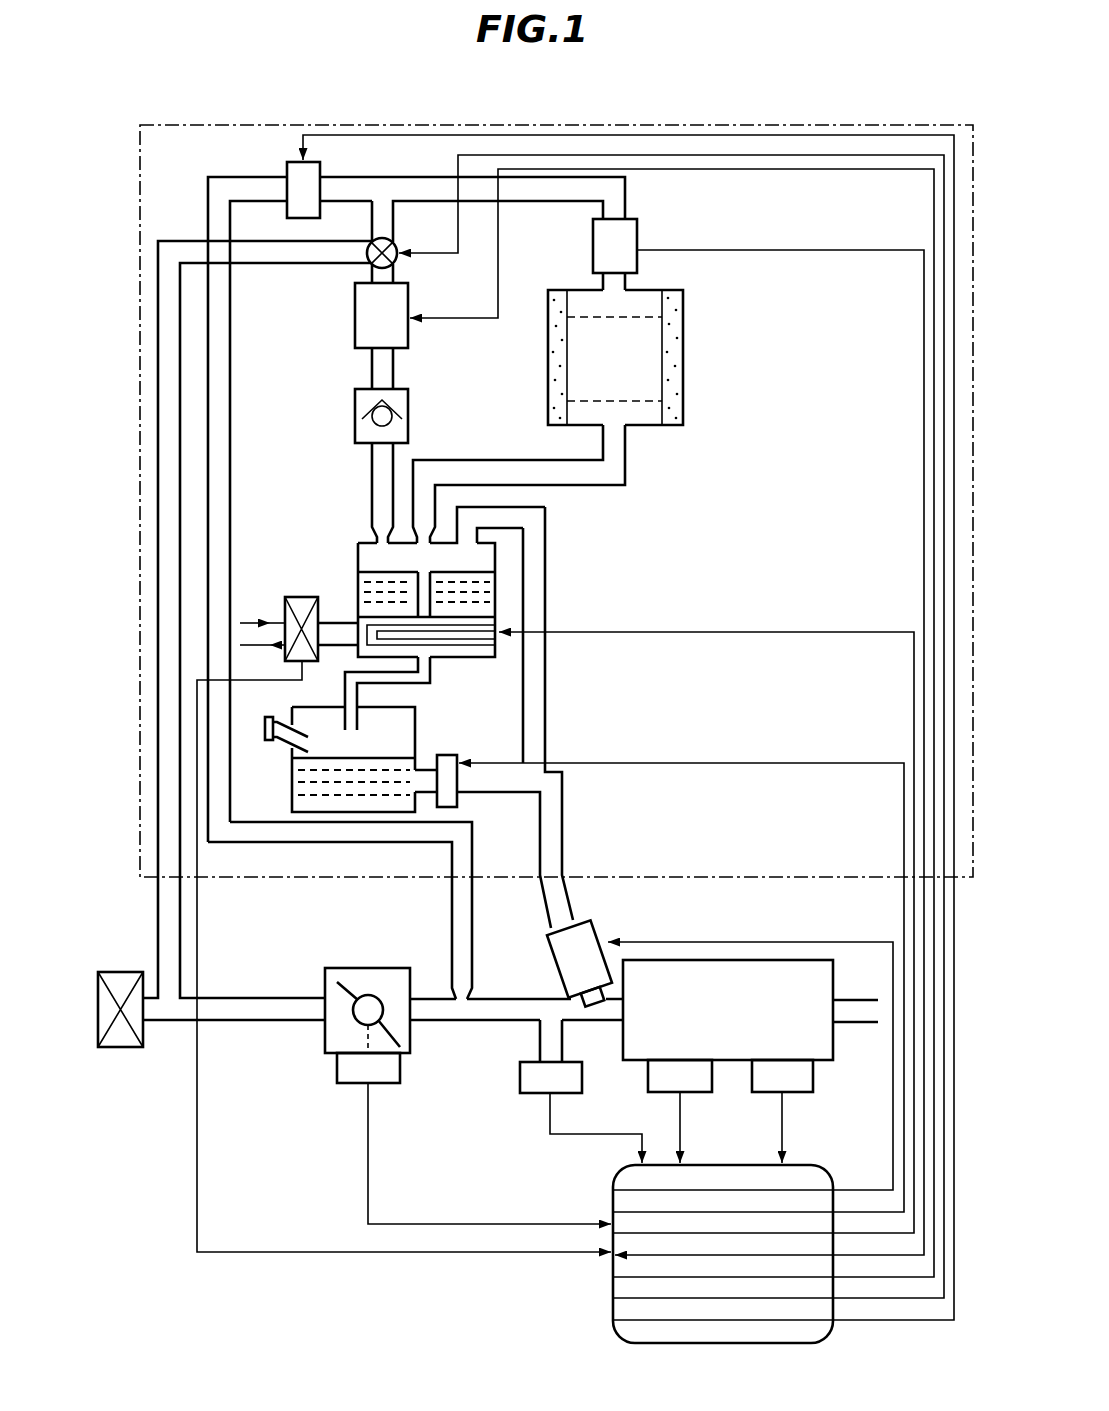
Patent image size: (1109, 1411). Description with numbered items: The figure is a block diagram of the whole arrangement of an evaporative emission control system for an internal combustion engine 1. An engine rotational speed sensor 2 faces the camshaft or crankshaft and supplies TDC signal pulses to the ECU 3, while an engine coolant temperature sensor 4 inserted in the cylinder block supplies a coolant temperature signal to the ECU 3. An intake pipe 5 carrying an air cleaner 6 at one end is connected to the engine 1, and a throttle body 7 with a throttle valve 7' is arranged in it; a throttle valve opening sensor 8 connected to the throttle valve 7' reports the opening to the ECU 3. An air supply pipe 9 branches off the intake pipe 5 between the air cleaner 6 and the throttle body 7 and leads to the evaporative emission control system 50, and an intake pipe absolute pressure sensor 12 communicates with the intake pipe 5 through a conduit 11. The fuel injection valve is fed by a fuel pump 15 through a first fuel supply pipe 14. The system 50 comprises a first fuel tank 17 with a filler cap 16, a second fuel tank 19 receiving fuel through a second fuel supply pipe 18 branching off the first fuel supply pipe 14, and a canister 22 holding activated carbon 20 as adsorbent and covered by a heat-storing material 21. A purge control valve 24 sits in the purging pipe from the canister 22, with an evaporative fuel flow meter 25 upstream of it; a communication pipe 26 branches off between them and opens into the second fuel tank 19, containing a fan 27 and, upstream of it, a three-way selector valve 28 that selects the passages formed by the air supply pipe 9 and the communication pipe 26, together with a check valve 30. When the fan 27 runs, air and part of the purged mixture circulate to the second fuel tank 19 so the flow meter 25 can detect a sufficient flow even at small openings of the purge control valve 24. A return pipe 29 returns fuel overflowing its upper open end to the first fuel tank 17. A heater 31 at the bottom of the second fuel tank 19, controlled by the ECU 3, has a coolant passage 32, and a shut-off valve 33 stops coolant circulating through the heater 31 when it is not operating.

The internal combustion engine 1 is at (833, 1065).
The engine rotational speed (NE) sensor 2 is at (752, 1075).
The electronic control unit (ECU) 3 is at (833, 1172).
The engine coolant temperature (TW) sensor 4 is at (648, 1075).
The intake pipe 5 is at (430, 1015).
The air cleaner 6 is at (135, 972).
The throttle body 7 is at (337, 1016).
The throttle valve 7' is at (333, 996).
The throttle valve opening sensor 8 is at (383, 1083).
The air supply pipe 9 is at (158, 903).
The conduit 11 is at (535, 1040).
The intake pipe absolute pressure (PBA) sensor 12 is at (528, 1093).
The first fuel supply pipe 14 is at (562, 835).
The fuel pump 15 is at (457, 800).
The filler cap 16 is at (265, 742).
The first fuel tank 17 is at (415, 735).
The second fuel supply pipe 18 is at (545, 718).
The second fuel tank 19 is at (497, 580).
The activated carbon 20 is at (633, 330).
The heat-storing material 21 is at (683, 372).
The canister 22 is at (665, 349).
The purge control valve 24 is at (320, 168).
The evaporative fuel flow meter 25 is at (637, 226).
The communication pipe 26 is at (393, 214).
The fan 27 is at (408, 300).
The selector valve 28 is at (373, 268).
The return pipe 29 is at (430, 668).
The check valve 30 is at (355, 418).
The heater 31 is at (500, 636).
The coolant passage 32 is at (457, 648).
The shut-off valve 33 is at (302, 597).
The evaporative emission control system 50 is at (323, 876).